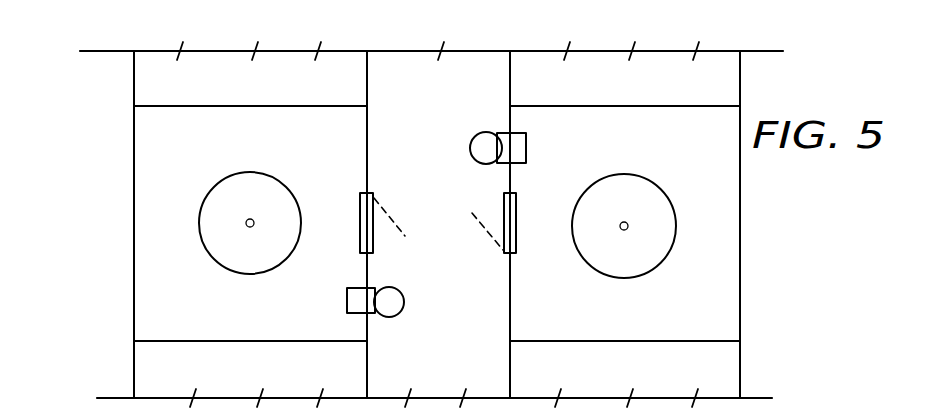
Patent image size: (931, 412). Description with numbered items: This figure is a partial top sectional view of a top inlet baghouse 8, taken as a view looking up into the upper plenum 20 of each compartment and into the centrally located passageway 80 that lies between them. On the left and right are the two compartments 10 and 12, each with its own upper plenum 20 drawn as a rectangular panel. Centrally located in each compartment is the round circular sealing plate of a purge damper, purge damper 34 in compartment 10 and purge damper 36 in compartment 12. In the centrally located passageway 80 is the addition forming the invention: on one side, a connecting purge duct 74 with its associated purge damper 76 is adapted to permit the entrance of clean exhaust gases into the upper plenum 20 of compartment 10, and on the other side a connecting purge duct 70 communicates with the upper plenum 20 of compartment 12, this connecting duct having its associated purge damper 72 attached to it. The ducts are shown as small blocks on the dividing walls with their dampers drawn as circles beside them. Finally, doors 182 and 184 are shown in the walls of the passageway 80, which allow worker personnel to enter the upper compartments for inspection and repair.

The baghouse 8 is at (482, 37).
The compartment 10 is at (110, 165).
The compartment 12 is at (764, 222).
The upper plenum 20 is at (310, 152).
The purge damper 34 is at (201, 205).
The purge damper 36 is at (575, 205).
The connecting purge duct 70 is at (529, 148).
The purge damper 72 is at (471, 141).
The connecting purge duct 74 is at (347, 300).
The purge damper 76 is at (400, 292).
The passageway 80 is at (456, 119).
The door 182 is at (385, 213).
The door 184 is at (492, 235).